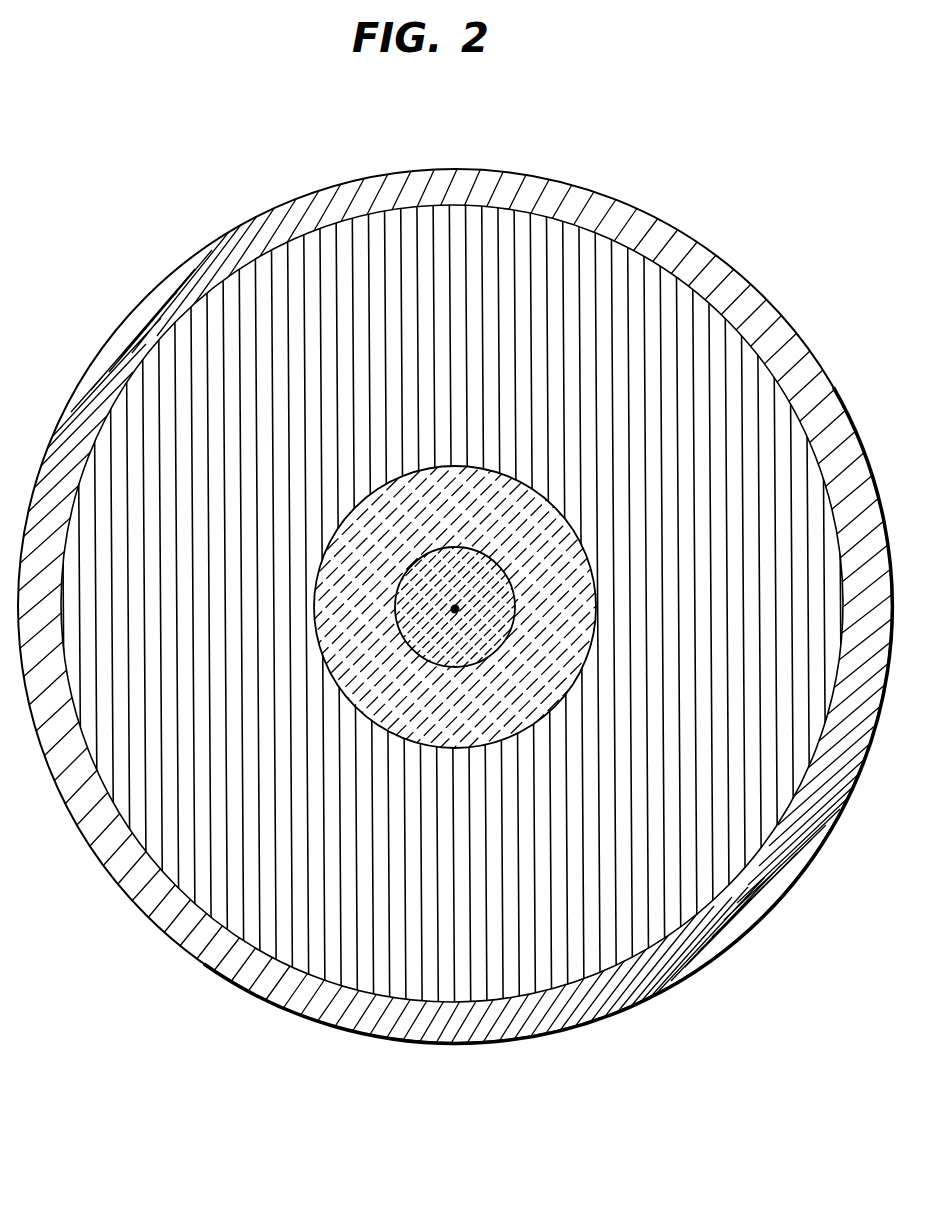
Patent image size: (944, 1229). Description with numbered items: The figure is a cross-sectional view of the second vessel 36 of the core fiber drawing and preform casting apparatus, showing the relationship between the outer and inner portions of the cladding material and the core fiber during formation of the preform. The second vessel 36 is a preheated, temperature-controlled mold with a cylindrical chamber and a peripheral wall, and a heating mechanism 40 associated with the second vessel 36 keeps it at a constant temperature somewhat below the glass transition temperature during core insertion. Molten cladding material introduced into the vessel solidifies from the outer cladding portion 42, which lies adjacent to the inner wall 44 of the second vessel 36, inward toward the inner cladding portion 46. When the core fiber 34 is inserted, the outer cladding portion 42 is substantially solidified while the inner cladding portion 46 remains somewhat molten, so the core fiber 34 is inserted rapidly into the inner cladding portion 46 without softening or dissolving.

The core fiber 34 is at (455, 609).
The second vessel 36 is at (697, 307).
The heating mechanism 40 is at (710, 963).
The outer cladding portion 42 is at (573, 650).
The inner wall 44 is at (388, 733).
The inner cladding portion 46 is at (398, 607).